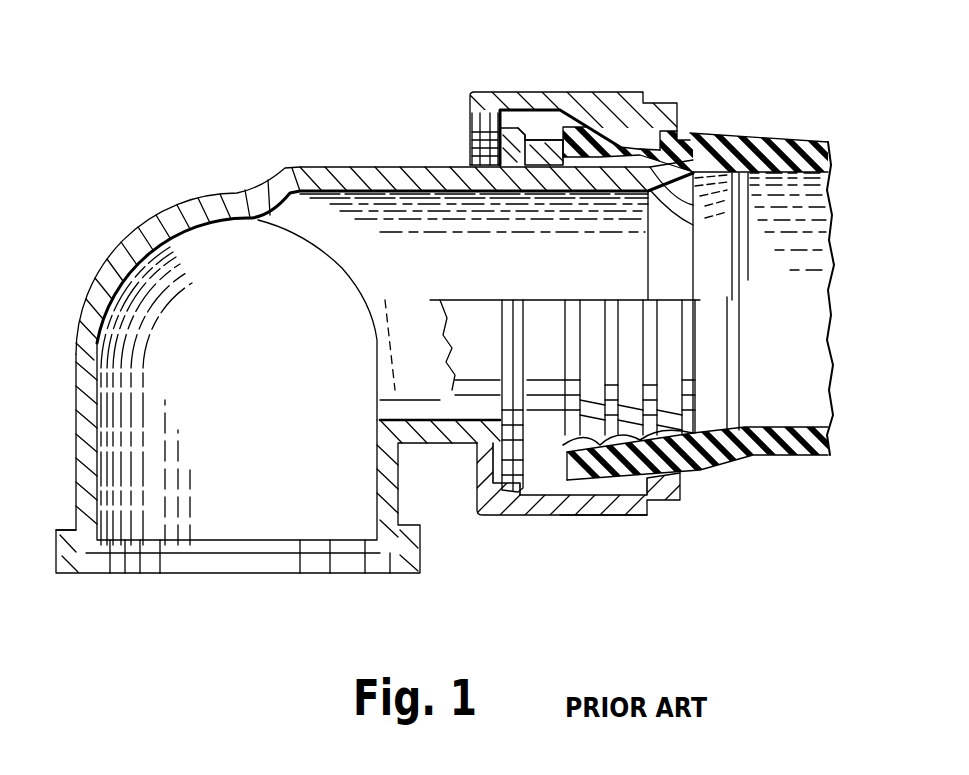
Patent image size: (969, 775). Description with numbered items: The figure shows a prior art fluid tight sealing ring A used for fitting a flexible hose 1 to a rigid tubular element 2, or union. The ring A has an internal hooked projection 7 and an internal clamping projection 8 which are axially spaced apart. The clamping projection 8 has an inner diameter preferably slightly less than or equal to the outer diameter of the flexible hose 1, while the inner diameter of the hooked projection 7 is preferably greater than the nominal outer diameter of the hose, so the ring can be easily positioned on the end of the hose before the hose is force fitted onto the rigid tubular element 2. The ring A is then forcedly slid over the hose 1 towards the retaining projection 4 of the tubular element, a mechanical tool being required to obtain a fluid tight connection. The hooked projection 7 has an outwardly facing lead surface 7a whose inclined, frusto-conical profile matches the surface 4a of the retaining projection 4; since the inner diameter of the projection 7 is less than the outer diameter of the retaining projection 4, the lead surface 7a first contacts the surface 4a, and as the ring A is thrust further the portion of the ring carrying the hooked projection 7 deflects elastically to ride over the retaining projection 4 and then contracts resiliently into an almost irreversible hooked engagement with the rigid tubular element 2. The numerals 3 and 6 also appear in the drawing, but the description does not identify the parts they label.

The flexible hose 1 is at (762, 152).
The rigid tubular element 2 is at (440, 150).
The barb / rib 3 is at (668, 143).
The retaining projection 4 is at (502, 110).
The surface of the retaining projection 4a is at (522, 117).
The coupling nut 6 is at (600, 480).
The hooked projection 7 is at (498, 463).
The lead surface 7a is at (470, 140).
The clamping projection 8 is at (675, 147).
The sealing ring A is at (594, 525).